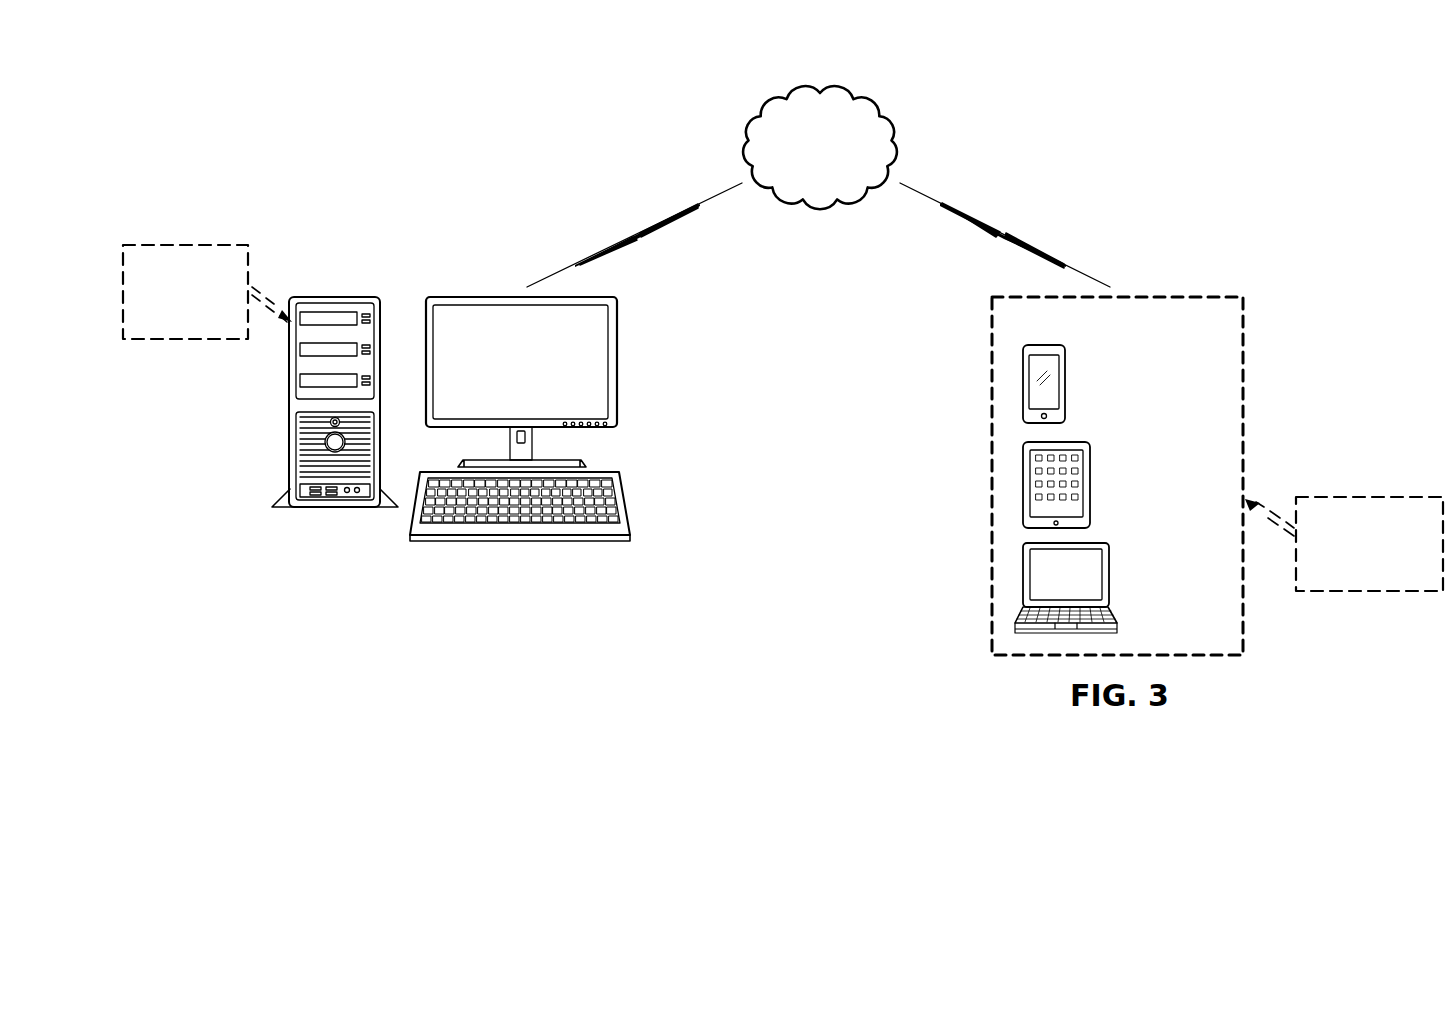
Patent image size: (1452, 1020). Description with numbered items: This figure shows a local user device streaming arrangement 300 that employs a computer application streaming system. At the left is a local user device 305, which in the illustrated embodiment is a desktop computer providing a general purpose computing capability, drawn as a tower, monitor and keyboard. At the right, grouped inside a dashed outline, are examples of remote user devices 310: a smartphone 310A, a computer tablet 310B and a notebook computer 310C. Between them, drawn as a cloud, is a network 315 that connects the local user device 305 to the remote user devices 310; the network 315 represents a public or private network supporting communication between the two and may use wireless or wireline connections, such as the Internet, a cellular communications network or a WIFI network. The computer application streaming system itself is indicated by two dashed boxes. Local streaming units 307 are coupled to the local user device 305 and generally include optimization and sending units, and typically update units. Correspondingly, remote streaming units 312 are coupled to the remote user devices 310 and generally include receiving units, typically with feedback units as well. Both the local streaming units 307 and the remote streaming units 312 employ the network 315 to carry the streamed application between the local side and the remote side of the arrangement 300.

The streaming arrangement 300 is at (484, 78).
The local user device 305 is at (541, 378).
The local streaming units 307 is at (172, 340).
The remote user devices 310 is at (1192, 297).
The smartphone 310A is at (1068, 384).
The computer tablet 310B is at (1092, 486).
The notebook computer 310C is at (1110, 575).
The remote streaming units 312 is at (1380, 592).
The network 315 is at (736, 143).